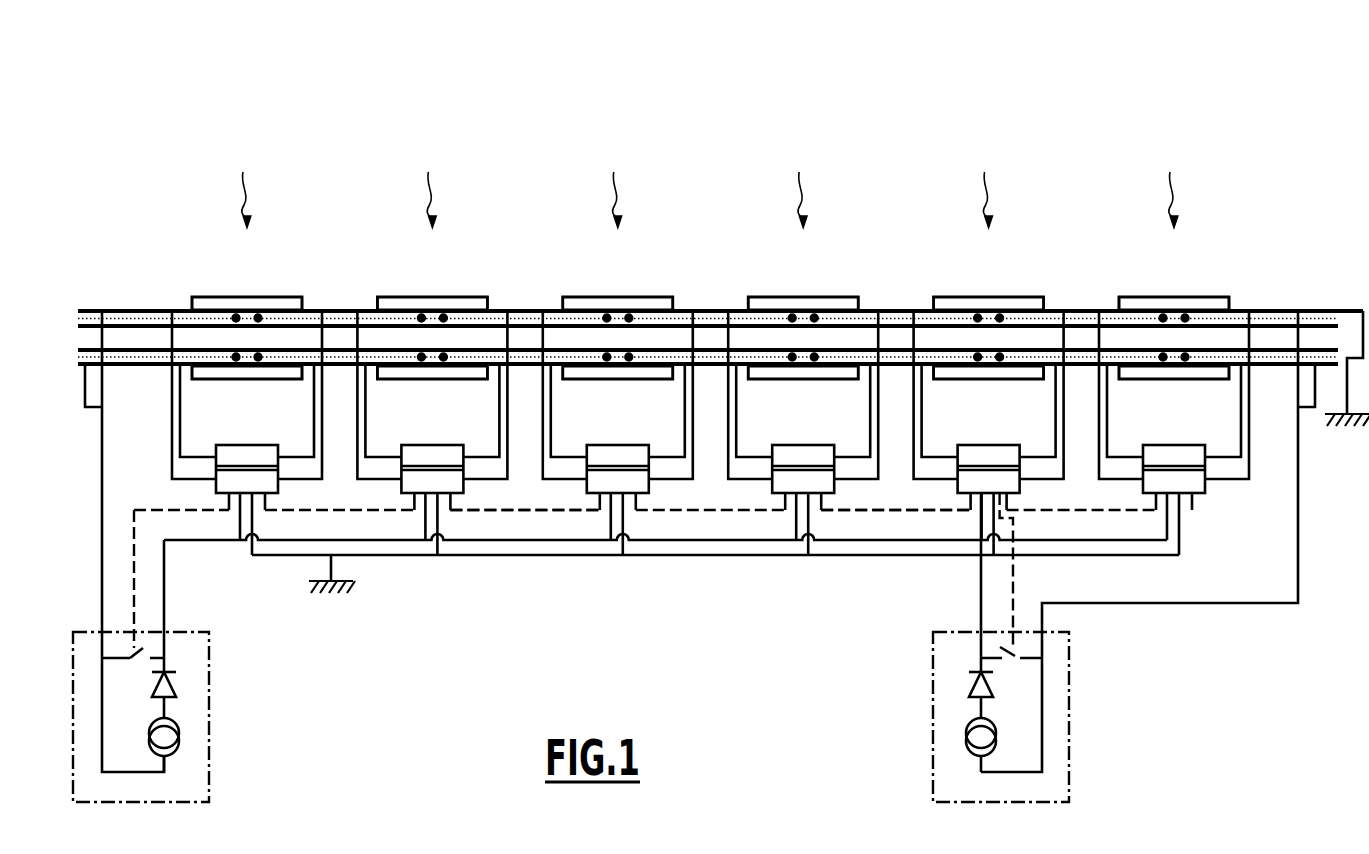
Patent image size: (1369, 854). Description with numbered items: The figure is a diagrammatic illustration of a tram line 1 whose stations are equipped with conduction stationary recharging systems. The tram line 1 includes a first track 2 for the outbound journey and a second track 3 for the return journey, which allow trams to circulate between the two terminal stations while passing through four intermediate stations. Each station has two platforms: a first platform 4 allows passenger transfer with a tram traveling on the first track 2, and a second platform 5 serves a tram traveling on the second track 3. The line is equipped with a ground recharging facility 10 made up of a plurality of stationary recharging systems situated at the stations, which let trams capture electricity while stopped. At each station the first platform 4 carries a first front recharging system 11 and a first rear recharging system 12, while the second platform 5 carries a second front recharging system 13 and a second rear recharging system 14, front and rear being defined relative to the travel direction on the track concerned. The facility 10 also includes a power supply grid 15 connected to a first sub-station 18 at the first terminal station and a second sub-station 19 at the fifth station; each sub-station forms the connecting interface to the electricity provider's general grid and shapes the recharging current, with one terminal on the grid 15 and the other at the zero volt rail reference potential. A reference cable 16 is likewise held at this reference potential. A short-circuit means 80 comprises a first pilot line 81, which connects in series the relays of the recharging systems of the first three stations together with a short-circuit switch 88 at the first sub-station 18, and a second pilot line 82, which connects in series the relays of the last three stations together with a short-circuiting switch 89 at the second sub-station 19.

The tram line 1 is at (1062, 178).
The first track 2 is at (1272, 368).
The second track 3 is at (1262, 310).
The first platform 4 is at (710, 402).
The second platform 5 is at (710, 275).
The ground recharging facility 10 is at (92, 581).
The first front recharging system 11 is at (737, 396).
The first rear recharging system 12 is at (683, 396).
The second front recharging system 13 is at (683, 281).
The second rear recharging system 14 is at (737, 281).
The power supply grid 15 is at (585, 543).
The reference cable 16 is at (533, 558).
The first power supply sub-station 18 is at (209, 713).
The second power supply sub-station 19 is at (933, 715).
The short-circuit means 80 is at (342, 506).
The first pilot line 81 is at (906, 507).
The second pilot line 82 is at (515, 507).
The short-circuit switch 88 is at (130, 655).
The short-circuiting switch 89 is at (1010, 655).